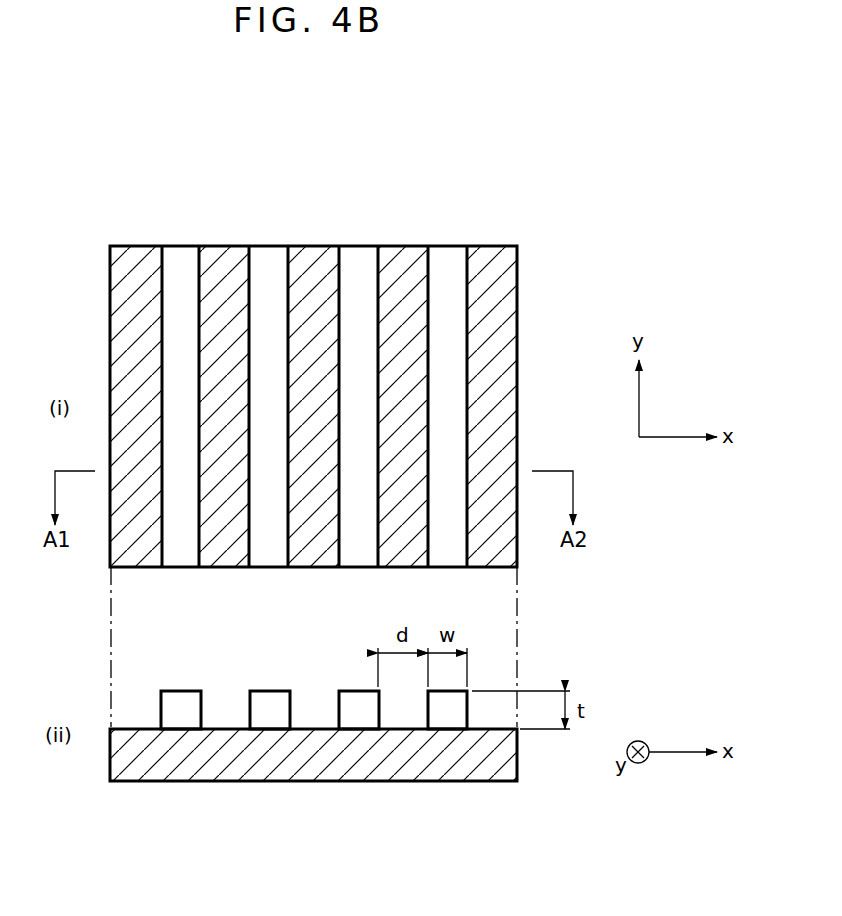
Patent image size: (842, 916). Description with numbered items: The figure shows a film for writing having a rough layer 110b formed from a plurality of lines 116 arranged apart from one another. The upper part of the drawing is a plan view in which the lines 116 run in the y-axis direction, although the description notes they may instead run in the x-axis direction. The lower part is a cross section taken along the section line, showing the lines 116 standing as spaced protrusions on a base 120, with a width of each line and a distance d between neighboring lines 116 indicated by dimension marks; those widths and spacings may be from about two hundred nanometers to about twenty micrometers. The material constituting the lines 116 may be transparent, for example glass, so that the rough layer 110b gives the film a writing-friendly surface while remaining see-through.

The lines 116 is at (180, 255).
The rough layer 110b is at (288, 197).
The substrate 120 is at (478, 772).